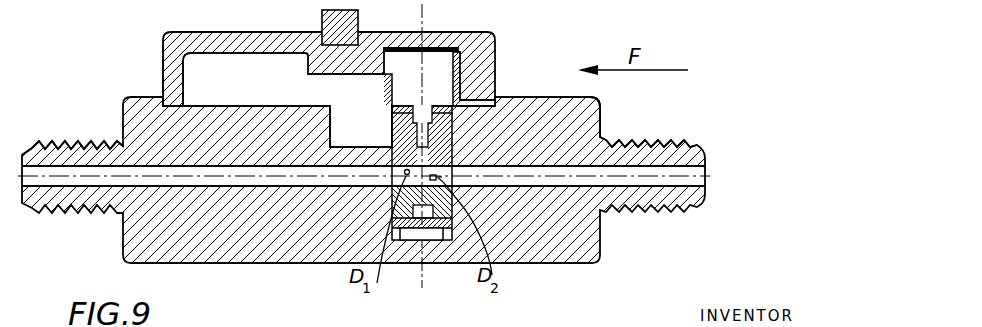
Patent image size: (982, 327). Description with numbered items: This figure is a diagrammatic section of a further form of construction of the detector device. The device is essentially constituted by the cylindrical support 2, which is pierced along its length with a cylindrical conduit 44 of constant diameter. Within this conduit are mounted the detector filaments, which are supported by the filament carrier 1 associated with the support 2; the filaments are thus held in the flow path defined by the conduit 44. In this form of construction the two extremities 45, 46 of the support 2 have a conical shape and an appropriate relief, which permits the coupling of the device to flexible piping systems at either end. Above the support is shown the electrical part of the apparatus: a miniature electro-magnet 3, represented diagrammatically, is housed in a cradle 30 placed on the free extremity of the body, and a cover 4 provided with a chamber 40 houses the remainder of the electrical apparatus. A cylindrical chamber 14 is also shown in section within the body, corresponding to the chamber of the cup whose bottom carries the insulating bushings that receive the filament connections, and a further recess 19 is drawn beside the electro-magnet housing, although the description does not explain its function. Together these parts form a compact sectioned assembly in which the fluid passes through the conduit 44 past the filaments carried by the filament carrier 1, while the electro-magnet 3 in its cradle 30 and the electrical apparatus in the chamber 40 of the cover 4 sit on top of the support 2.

The filament carrier 1 is at (368, 167).
The cylindrical support 2 is at (568, 264).
The miniature electro-magnet 3 is at (441, 88).
The cover 4 is at (442, 30).
The cylindrical chamber 14 is at (432, 233).
The recess 19 is at (392, 133).
The cradle 30 is at (440, 90).
The chamber 40 is at (200, 80).
The cylindrical conduit 44 is at (600, 138).
The extremity 45 is at (664, 145).
The extremity 46 is at (97, 145).